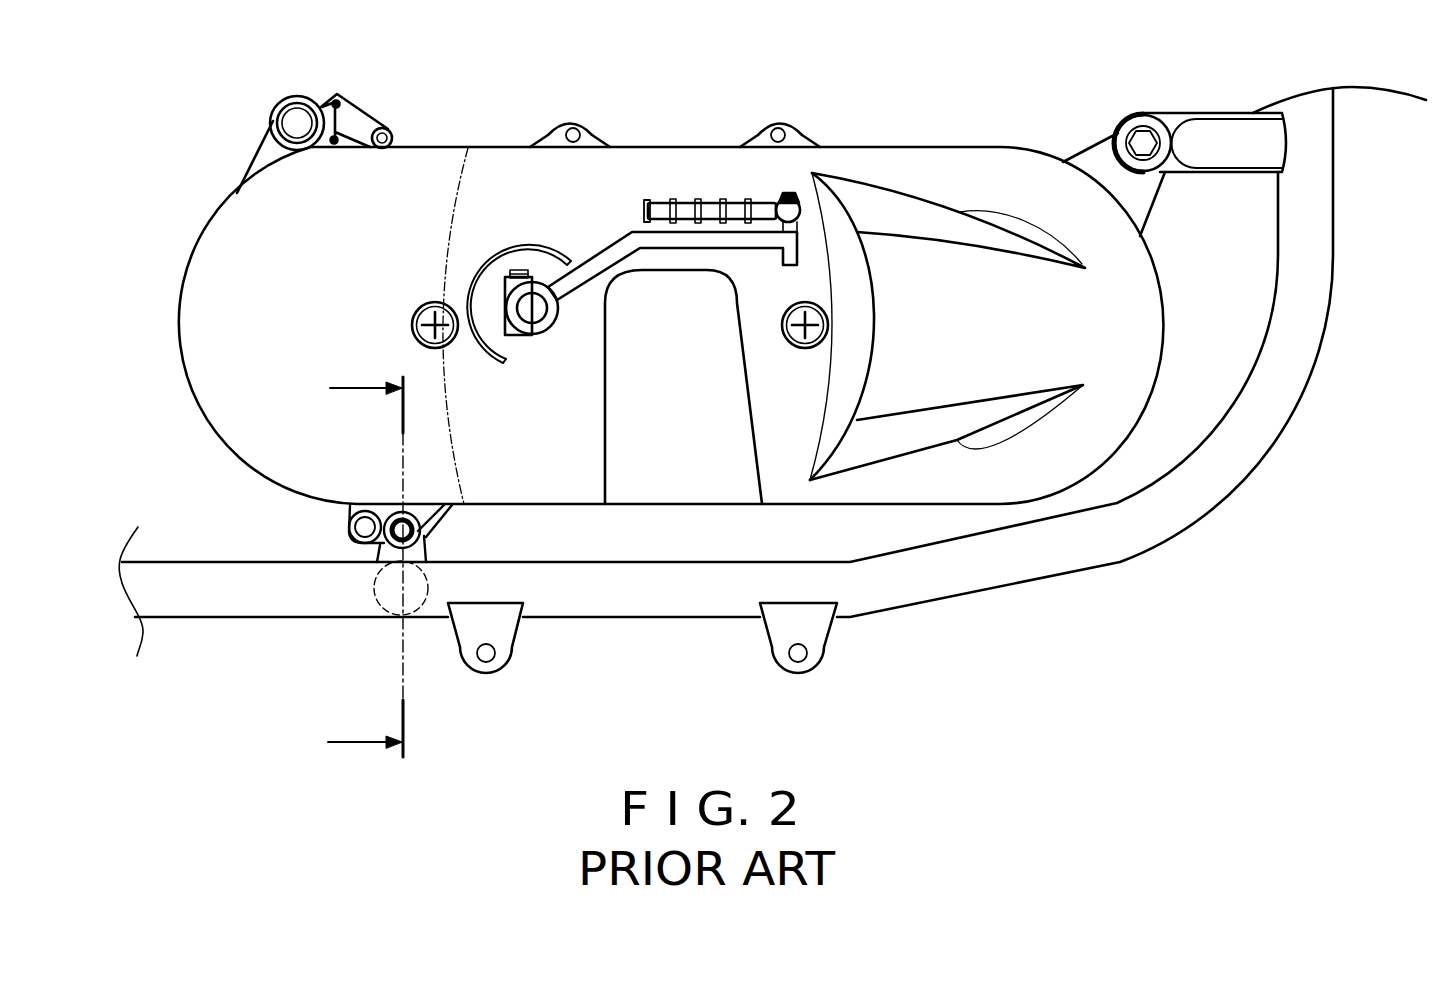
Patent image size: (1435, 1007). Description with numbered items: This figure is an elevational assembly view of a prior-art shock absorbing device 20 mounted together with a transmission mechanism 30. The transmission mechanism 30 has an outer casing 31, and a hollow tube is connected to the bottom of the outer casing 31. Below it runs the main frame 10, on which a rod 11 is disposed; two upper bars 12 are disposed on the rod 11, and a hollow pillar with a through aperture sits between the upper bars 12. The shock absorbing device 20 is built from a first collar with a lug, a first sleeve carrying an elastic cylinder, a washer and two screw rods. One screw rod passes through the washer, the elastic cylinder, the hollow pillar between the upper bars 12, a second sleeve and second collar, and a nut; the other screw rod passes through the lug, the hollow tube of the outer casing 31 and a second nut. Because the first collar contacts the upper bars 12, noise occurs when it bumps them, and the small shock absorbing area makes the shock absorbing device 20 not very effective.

The main frame 10 is at (690, 605).
The rod 11 is at (393, 597).
The upper bars 12 is at (413, 552).
The shock absorbing device 20 is at (395, 507).
The transmission mechanism 30 is at (658, 120).
The outer casing 31 is at (237, 438).